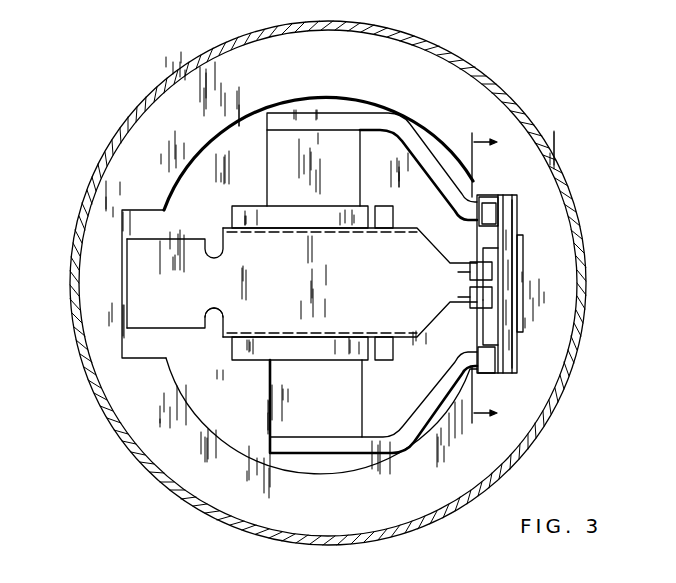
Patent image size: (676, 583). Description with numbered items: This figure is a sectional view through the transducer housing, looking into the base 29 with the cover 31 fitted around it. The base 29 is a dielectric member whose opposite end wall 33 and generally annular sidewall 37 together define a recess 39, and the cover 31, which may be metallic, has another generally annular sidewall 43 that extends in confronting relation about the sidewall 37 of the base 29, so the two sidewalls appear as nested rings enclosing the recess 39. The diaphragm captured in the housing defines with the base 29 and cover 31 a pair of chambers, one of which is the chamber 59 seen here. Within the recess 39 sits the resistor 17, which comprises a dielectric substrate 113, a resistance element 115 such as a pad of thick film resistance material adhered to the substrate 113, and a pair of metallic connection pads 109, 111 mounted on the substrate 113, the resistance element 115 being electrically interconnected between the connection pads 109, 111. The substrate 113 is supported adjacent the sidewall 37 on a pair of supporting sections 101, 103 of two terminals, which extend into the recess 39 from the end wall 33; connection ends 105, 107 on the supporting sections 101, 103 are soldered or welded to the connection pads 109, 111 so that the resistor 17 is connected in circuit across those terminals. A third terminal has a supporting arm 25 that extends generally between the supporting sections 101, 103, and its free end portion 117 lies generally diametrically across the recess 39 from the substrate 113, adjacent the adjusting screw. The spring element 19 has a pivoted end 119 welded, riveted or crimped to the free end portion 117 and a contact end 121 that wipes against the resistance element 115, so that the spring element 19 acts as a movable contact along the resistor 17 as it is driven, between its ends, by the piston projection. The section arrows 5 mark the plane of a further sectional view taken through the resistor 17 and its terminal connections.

The section line 5- 5 is at (491, 278).
The resistor 17 is at (532, 328).
The spring element 19 is at (337, 266).
The supporting arm 25 is at (213, 330).
The base 29 is at (181, 99).
The cover 31 is at (138, 100).
The opposite end wall 33 is at (140, 408).
The sidewall 37 is at (172, 183).
The recess 39 is at (212, 425).
The sidewall 43 is at (113, 139).
The chamber 59 is at (240, 150).
The supporting section 101 is at (425, 148).
The supporting section 103 is at (443, 398).
The connection end 105 is at (497, 212).
The connection end 107 is at (485, 372).
The connection pad 109 is at (495, 218).
The connection pad 111 is at (503, 347).
The substrate 113 is at (517, 277).
The resistance element 115 is at (522, 258).
The free end portion 117 is at (127, 287).
The pivoted end 119 is at (133, 312).
The contact end 121 is at (468, 287).